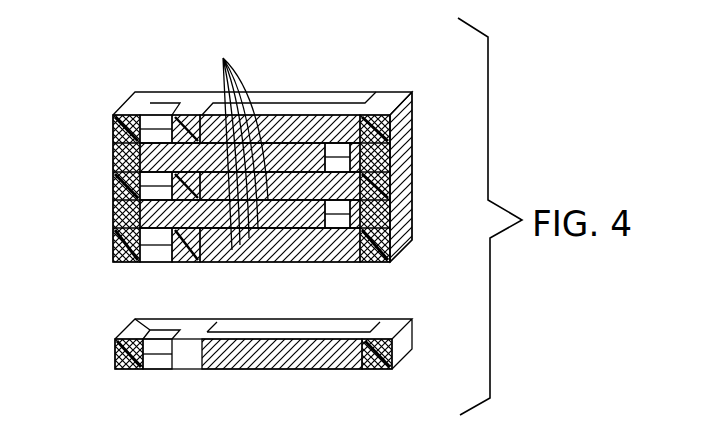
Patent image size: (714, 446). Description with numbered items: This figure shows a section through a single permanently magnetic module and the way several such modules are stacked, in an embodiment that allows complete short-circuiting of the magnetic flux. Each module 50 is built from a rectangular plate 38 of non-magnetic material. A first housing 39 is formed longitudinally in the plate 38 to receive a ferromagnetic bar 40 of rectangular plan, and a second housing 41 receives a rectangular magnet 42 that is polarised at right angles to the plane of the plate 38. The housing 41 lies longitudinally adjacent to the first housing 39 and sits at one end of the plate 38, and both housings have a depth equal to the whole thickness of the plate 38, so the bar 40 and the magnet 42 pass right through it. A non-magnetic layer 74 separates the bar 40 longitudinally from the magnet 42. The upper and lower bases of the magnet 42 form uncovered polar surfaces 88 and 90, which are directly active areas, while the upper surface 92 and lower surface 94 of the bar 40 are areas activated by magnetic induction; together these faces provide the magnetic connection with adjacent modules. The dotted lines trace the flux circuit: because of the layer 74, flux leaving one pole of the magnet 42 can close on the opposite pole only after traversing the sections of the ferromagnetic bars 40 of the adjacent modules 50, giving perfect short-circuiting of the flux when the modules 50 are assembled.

The rectangular plate 38 is at (377, 367).
The first housing 39 is at (285, 100).
The ferromagnetic bar 40 is at (237, 139).
The second housing 41 is at (163, 103).
The rectangular magnet 42 is at (130, 110).
The module 50 is at (125, 377).
The non-magnetic layer 74 is at (191, 264).
The upper polar surface 88 is at (153, 337).
The lower polar surface 90 is at (172, 370).
The upper surface of the bar 92 is at (308, 332).
The lower surface of the bar 94 is at (290, 370).